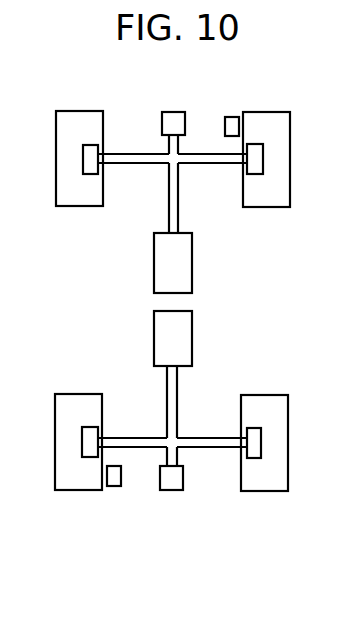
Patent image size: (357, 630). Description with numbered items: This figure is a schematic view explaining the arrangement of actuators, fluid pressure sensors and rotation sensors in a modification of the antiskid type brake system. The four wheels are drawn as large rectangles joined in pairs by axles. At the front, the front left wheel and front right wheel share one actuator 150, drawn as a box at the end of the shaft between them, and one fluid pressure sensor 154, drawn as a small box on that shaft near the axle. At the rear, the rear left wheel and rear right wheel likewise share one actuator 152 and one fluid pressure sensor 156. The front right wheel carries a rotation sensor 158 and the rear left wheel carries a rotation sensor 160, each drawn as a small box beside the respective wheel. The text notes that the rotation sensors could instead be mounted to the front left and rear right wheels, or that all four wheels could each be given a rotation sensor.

The actuator 150 is at (194, 263).
The actuator 152 is at (194, 343).
The fluid pressure sensor 154 is at (176, 110).
The fluid pressure sensor 156 is at (171, 491).
The rotation sensor 158 is at (232, 116).
The rotation sensor 160 is at (113, 488).